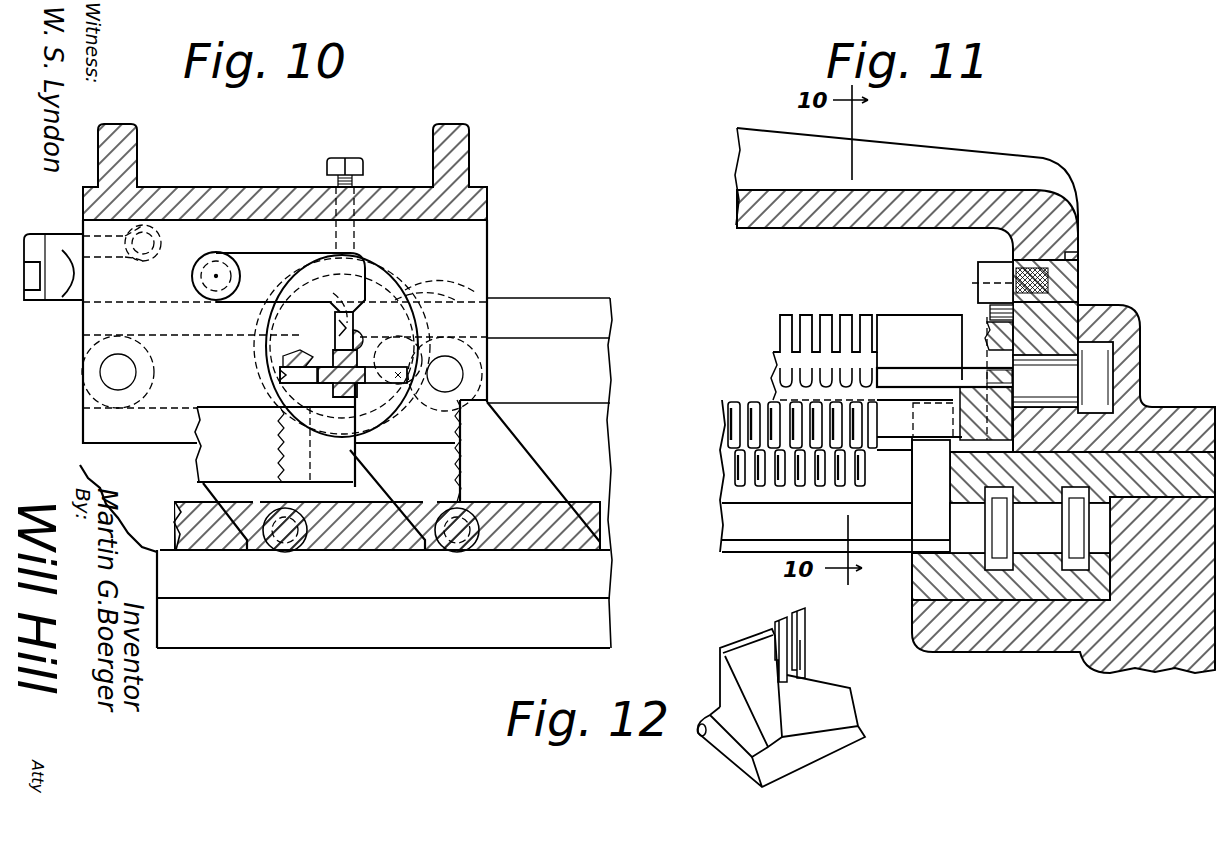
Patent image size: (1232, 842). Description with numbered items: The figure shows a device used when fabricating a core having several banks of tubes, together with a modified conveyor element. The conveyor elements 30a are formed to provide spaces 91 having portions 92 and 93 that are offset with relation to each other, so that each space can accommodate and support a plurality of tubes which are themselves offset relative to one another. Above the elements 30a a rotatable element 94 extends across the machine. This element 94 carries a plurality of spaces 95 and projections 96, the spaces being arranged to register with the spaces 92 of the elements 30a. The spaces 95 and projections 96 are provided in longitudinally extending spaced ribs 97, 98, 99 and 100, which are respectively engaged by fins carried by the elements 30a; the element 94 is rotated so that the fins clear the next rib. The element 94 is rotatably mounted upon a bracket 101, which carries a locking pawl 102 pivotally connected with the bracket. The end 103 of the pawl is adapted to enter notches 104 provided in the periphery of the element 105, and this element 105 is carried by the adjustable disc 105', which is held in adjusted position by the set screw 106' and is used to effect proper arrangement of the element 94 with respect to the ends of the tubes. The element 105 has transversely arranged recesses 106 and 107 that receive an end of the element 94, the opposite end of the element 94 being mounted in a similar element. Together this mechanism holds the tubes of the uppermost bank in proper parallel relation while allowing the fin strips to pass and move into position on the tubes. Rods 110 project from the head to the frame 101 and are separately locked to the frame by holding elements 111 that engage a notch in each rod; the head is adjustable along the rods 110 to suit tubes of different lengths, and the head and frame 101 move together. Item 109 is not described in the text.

In FIG. 10, the bracket 101 is at (487, 209).
In FIG. 11, the bracket 101 is at (1072, 227).
In FIG. 10, the locking pawl 102 is at (264, 262).
In FIG. 11, the locking pawl 102 is at (995, 258).
In FIG. 10, the end of the pawl 103 is at (357, 292).
In FIG. 10, the notches 104 is at (307, 288).
In FIG. 11, the notches 104 is at (948, 447).
In FIG. 10, the element 105 is at (432, 330).
In FIG. 11, the element 105 is at (1019, 371).
In FIG. 11, the adjustable disc 105' is at (1074, 277).
In FIG. 10, the transversely arranged recess 106 is at (440, 291).
In FIG. 10, the set screw 106' is at (368, 188).
In FIG. 11, the transversely arranged recess 107 is at (967, 403).
In FIG. 10, the spring 109 is at (284, 357).
In FIG. 10, the rib 100 is at (279, 373).
In FIG. 10, the rods 110 is at (52, 290).
In FIG. 10, the holding elements 111 is at (62, 233).
In FIG. 10, the rotatable element 94 is at (365, 370).
In FIG. 11, the rotatable element 94 is at (897, 318).
In FIG. 10, the spaces 95 is at (350, 327).
In FIG. 11, the spaces 95 is at (873, 317).
In FIG. 11, the projections 96 is at (847, 313).
In FIG. 10, the rib 97 is at (337, 343).
In FIG. 11, the rib 97 is at (935, 318).
In FIG. 10, the rib 98 is at (408, 345).
In FIG. 11, the rib 98 is at (938, 375).
In FIG. 10, the rib 99 is at (355, 392).
In FIG. 11, the rib 99 is at (893, 437).
In FIG. 12, the spaces 91 is at (802, 612).
In FIG. 11, the offset portion 92 is at (729, 432).
In FIG. 12, the offset portion 92 is at (795, 650).
In FIG. 11, the offset portion 93 is at (736, 461).
In FIG. 12, the offset portion 93 is at (803, 663).
In FIG. 10, the conveyor elements 30a is at (293, 405).
In FIG. 11, the conveyor elements 30a is at (720, 503).
In FIG. 12, the conveyor elements 30a is at (728, 688).